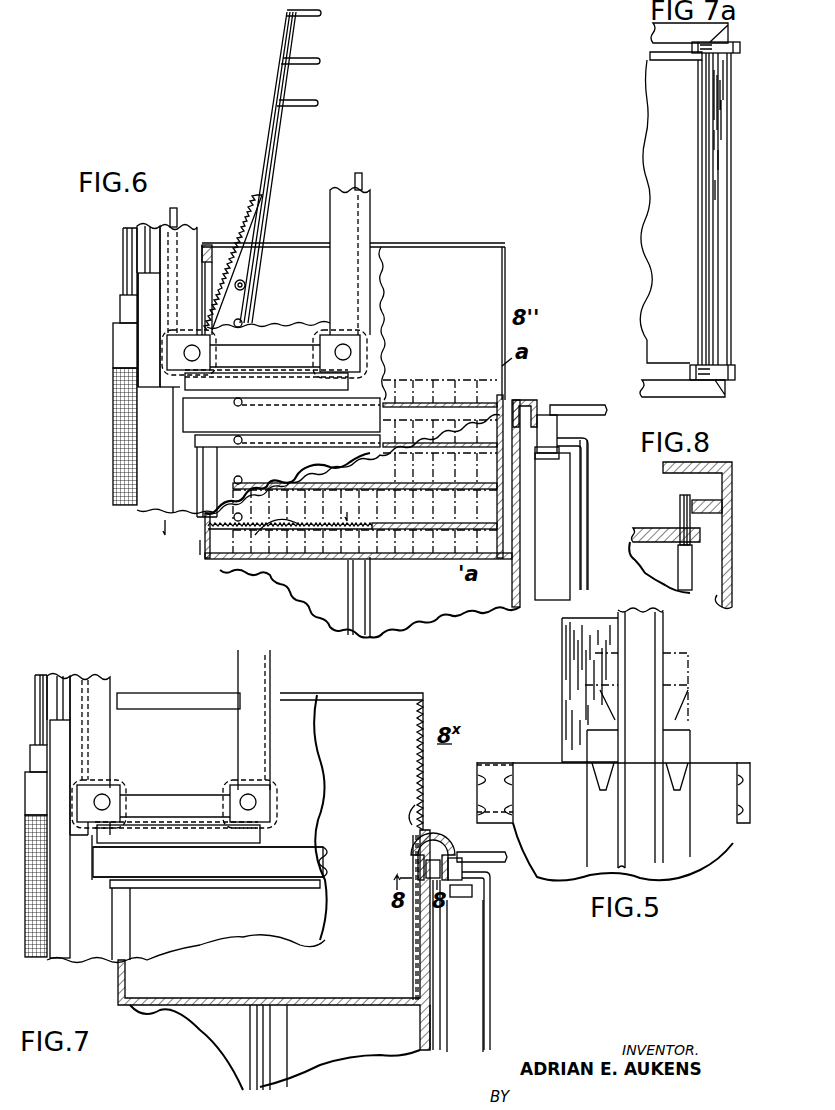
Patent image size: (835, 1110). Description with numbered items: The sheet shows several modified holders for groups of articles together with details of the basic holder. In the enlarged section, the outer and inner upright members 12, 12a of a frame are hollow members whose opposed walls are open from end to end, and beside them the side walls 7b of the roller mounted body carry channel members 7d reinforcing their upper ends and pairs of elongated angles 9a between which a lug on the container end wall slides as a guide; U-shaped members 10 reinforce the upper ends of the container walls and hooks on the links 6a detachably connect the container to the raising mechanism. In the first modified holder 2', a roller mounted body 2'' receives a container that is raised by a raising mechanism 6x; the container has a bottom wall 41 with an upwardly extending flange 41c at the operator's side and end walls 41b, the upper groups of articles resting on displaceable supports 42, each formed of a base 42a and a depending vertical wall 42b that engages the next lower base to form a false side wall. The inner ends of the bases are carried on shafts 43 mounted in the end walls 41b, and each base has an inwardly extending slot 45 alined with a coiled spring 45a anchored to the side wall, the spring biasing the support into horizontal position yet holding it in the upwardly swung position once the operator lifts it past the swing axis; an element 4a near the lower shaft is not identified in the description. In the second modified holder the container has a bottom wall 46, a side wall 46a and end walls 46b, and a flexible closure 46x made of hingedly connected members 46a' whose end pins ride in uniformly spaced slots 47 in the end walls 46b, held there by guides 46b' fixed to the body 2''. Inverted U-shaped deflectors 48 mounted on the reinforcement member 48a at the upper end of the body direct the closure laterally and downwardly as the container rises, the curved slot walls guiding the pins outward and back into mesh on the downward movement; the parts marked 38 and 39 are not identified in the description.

In FIG. 6, the holder 2' is at (195, 452).
In FIG. 6, the roller mounted body 2'' is at (310, 459).
In FIG. 7a, the roller mounted body 2'' is at (684, 221).
In FIG. 8, the roller mounted body 2'' is at (714, 535).
In FIG. 7, the roller mounted body 2'' is at (187, 920).
In FIG. 6, the pivot pin 4a is at (205, 546).
In FIG. 6, the links 6a is at (271, 526).
In FIG. 6, the raising mechanism 6x is at (318, 322).
In FIG. 5, the side walls 7b is at (718, 765).
In FIG. 5, the channel members 7d is at (498, 762).
In FIG. 5, the elongated angles 9a is at (590, 818).
In FIG. 6, the U-shaped members 10 is at (438, 248).
In FIG. 7, the U-shaped members 10 is at (180, 712).
In FIG. 6, the outer upright members 12 is at (182, 230).
In FIG. 7, the outer upright members 12 is at (88, 678).
In FIG. 6, the inner upright members 12a is at (372, 210).
In FIG. 5, the inner upright members 12a is at (665, 626).
In FIG. 7, the inner upright members 12a is at (238, 670).
In FIG. 7a, the plate 38 is at (698, 274).
In FIG. 7, the ratchet pawl 39 is at (415, 783).
In FIG. 6, the bottom wall 41 is at (405, 562).
In FIG. 6, the end walls 41b is at (386, 296).
In FIG. 6, the flange 41c is at (505, 533).
In FIG. 6, the displaceable supports 42 is at (437, 405).
In FIG. 6, the base 42a is at (283, 142).
In FIG. 6, the vertical wall 42b is at (307, 60).
In FIG. 6, the shafts 43 is at (245, 286).
In FIG. 6, the slot 45 is at (285, 508).
In FIG. 6, the coiled spring 45a is at (270, 543).
In FIG. 8, the bottom wall 46 is at (718, 607).
In FIG. 7, the bottom wall 46 is at (222, 1001).
In FIG. 7, the side wall 46a is at (241, 917).
In FIG. 8, the hingedly connected members 46a' is at (663, 578).
In FIG. 7, the hingedly connected members 46a' is at (421, 943).
In FIG. 8, the end walls 46b is at (650, 571).
In FIG. 7, the end walls 46b is at (351, 798).
In FIG. 8, the guides 46b' is at (696, 490).
In FIG. 7, the guides 46b' is at (411, 1044).
In FIG. 8, the flexible closure 46x is at (680, 498).
In FIG. 8, the slots 47 is at (705, 545).
In FIG. 7, the slots 47 is at (425, 720).
In FIG. 7a, the deflectors 48 is at (737, 53).
In FIG. 7, the deflectors 48 is at (445, 840).
In FIG. 7a, the reinforcement member 48a is at (713, 306).
In FIG. 7, the reinforcement member 48a is at (285, 873).